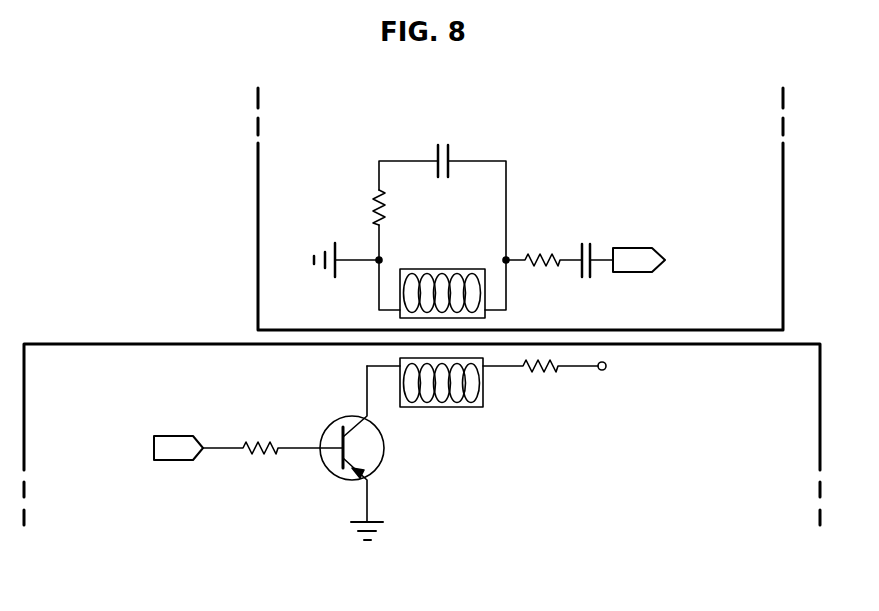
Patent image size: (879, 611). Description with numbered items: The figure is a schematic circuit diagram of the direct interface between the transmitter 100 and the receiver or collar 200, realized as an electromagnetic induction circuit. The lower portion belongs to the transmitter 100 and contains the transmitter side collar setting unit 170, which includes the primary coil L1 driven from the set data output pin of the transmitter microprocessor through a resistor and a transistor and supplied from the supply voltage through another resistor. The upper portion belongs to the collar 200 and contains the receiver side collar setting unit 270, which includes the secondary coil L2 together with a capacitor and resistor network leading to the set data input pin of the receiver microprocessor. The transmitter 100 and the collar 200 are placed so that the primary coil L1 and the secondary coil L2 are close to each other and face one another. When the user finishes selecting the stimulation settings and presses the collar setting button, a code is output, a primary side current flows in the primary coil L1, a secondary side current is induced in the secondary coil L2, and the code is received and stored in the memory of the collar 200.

The transmitter 100 is at (78, 362).
The receiver (collar) 200 is at (262, 283).
The collar setting unit of the collar 270 is at (543, 210).
The collar setting unit of the transmitter 170 is at (341, 448).
The primary coil L1 is at (462, 407).
The secondary coil L2 is at (462, 268).